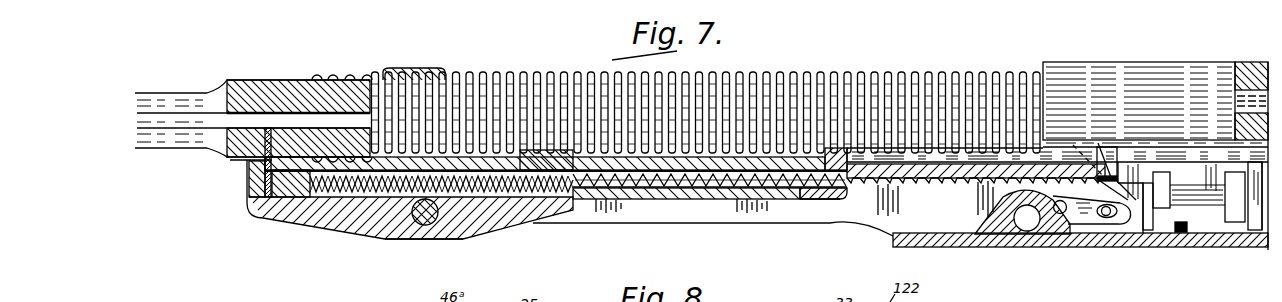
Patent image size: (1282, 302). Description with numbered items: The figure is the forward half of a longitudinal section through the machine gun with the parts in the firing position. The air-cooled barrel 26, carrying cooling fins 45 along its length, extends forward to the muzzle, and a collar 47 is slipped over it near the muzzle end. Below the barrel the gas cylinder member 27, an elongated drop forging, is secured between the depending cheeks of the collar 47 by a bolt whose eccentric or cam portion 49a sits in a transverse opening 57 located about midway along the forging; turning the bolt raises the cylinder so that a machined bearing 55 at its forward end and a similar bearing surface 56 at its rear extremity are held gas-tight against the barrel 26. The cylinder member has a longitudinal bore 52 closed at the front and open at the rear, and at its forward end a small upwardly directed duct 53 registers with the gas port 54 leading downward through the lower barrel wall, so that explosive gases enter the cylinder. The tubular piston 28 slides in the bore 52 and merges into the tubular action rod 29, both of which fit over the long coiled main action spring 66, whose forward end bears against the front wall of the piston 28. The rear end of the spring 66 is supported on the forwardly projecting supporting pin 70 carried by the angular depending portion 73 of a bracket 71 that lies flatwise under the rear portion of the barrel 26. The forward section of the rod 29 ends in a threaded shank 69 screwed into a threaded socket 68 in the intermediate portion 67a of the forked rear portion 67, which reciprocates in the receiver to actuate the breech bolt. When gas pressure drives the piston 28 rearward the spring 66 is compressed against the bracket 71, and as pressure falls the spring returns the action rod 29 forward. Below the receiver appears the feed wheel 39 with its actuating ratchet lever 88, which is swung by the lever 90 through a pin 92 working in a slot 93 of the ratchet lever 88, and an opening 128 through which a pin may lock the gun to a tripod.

The barrel 26 is at (1088, 62).
The gas cylinder member 27 is at (337, 230).
The piston 28 is at (332, 196).
The action rod 29 is at (665, 194).
The feed wheel 39 is at (1202, 200).
The cooling fins 45 is at (497, 75).
The collar 47 is at (410, 68).
The eccentric or cam portion 49a is at (418, 224).
The longitudinal bore 52 is at (268, 202).
The duct 53 is at (262, 170).
The gas port 54 is at (232, 156).
The machined bearing 55 is at (247, 164).
The bearing surface 56 is at (550, 158).
The transverse opening 57 is at (430, 224).
The main action spring 66 is at (876, 180).
The forked rear portion 67 is at (963, 152).
The intermediate portion of the fork 67a is at (836, 199).
The threaded socket 68 is at (840, 197).
The threaded shank 69 is at (852, 196).
The supporting pin 70 is at (893, 180).
The bracket 71 is at (1193, 153).
The angular depending portion 73 is at (1108, 163).
The ratchet lever 88 is at (1083, 218).
The lever 90 is at (1110, 187).
The pin 92 is at (1108, 216).
The slot 93 is at (1103, 217).
The opening 128 is at (1027, 219).